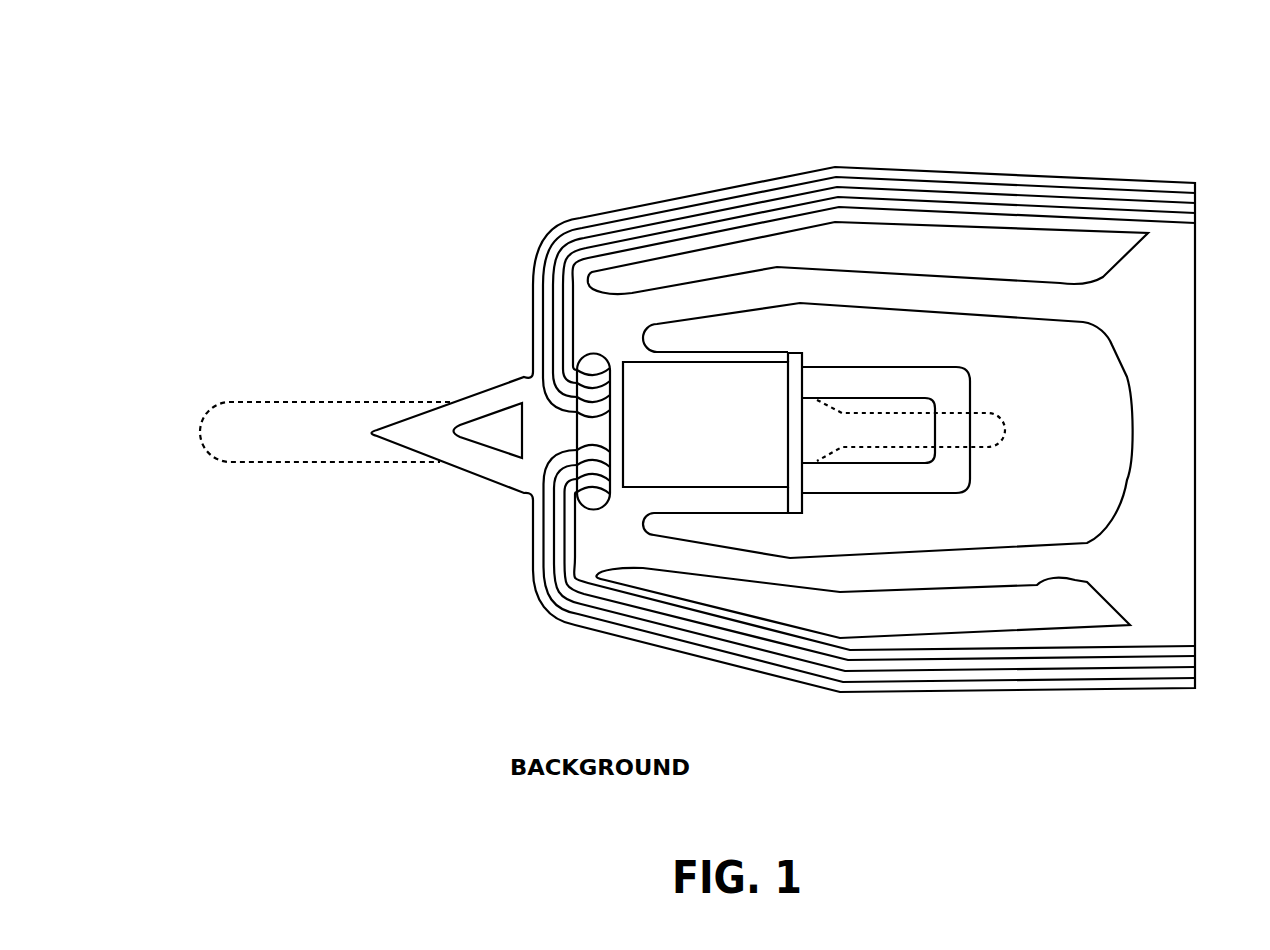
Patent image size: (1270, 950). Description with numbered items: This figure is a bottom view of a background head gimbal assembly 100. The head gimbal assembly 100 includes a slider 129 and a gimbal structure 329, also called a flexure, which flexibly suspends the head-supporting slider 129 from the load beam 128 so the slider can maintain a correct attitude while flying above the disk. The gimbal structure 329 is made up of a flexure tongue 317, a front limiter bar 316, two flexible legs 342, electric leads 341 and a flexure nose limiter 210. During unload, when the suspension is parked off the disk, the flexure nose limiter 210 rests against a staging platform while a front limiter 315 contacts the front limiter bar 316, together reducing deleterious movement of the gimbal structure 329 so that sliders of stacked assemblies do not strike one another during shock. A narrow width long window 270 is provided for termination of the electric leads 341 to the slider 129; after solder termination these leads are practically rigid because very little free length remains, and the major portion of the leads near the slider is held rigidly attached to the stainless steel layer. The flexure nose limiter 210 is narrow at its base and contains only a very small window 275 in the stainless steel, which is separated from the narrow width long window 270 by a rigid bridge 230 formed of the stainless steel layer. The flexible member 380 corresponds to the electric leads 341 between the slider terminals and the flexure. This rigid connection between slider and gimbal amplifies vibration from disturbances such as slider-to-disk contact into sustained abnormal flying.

The head gimbal assembly 100 is at (754, 19).
The load beam 128 is at (355, 452).
The slider 129 is at (738, 388).
The flexure nose limiter 210 is at (483, 460).
The rigid bridge 230 is at (552, 383).
The narrow width long window 270 is at (582, 350).
The very small window 275 is at (475, 430).
The front limiter 315 is at (985, 443).
The front limiter bar 316 is at (903, 378).
The flexure tongue 317 is at (758, 498).
The gimbal structure 329 is at (1186, 388).
The electric leads 341 is at (1077, 193).
The flexible legs 342 is at (932, 292).
The flexible member 380 is at (548, 420).